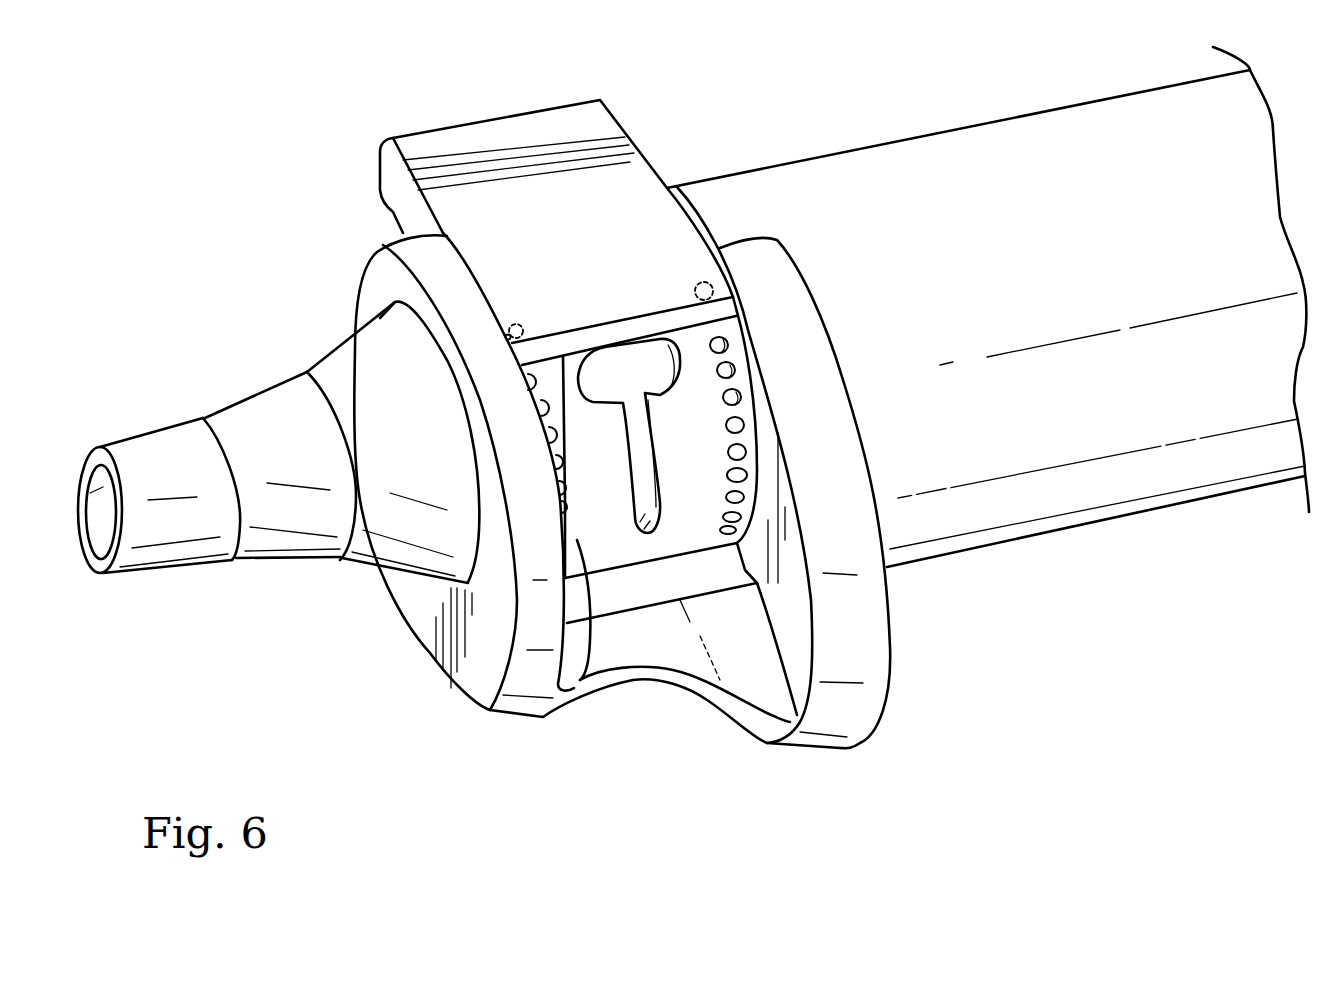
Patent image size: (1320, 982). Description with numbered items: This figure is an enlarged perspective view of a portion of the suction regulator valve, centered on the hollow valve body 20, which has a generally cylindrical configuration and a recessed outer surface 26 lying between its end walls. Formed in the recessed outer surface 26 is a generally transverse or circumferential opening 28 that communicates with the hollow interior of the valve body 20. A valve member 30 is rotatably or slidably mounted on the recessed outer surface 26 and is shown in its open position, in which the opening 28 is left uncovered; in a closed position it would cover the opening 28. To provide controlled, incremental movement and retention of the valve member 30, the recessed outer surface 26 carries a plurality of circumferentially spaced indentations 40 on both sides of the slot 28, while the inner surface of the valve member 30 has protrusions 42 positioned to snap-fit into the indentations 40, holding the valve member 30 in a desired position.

The valve body 20 is at (670, 646).
The recessed outer surface 26 is at (583, 540).
The opening 28 is at (640, 457).
The valve member 30 is at (585, 219).
The indentations 40 is at (727, 345).
The protrusions 42 is at (692, 288).